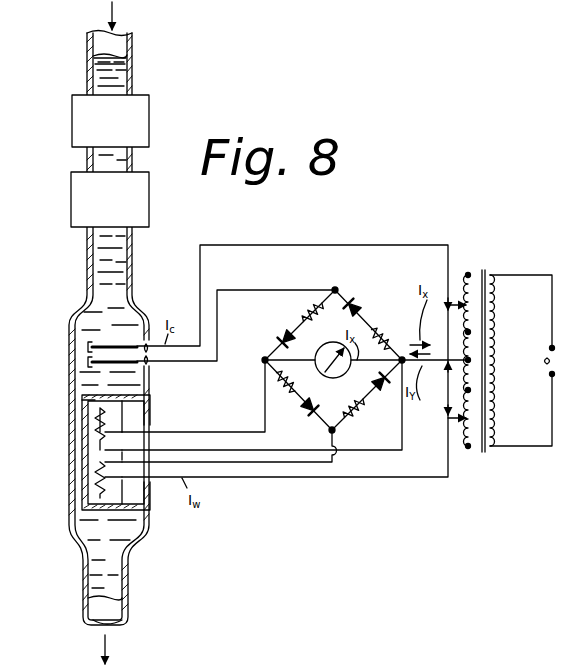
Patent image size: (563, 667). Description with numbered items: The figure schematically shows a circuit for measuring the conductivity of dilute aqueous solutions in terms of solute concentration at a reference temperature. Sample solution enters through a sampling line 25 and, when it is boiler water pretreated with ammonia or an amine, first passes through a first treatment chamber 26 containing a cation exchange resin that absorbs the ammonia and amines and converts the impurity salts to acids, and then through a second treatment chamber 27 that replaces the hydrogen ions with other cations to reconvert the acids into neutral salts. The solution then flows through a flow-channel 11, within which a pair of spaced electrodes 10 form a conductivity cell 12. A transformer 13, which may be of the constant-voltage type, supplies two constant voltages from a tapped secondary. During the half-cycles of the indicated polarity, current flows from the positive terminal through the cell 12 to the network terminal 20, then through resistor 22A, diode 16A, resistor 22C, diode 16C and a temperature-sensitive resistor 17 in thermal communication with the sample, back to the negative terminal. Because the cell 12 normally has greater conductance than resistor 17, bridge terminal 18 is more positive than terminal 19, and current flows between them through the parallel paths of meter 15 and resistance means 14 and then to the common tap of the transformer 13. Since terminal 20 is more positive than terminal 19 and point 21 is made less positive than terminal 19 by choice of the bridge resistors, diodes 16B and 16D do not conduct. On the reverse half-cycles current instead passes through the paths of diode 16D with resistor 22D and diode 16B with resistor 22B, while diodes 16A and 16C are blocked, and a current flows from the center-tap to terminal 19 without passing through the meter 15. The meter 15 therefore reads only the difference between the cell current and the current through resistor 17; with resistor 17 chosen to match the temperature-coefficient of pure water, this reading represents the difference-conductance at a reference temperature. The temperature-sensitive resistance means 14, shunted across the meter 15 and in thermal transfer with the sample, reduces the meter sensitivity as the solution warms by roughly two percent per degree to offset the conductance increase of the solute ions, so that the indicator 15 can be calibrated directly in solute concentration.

The spaced electrodes 10 is at (100, 324).
The flow-channel 11 is at (72, 385).
The conductivity cell 12 is at (87, 353).
The transformer 13 is at (496, 263).
The temperature-sensitive resistance means 14 is at (118, 418).
The meter 15 is at (333, 346).
The diode 16A is at (282, 335).
The diode 16B is at (356, 306).
The diode 16C is at (305, 413).
The diode 16D is at (392, 386).
The temperature-sensitive resistor 17 is at (118, 470).
The bridge terminal 18 is at (265, 360).
The bridge terminal 19 is at (403, 358).
The network terminal 20 is at (337, 289).
The bridge point 21 is at (338, 437).
The resistor 22A is at (311, 308).
The resistor 22B is at (398, 323).
The resistor 22C is at (280, 388).
The resistor 22D is at (358, 413).
The sampling line 25 is at (90, 50).
The first treatment chamber 26 is at (80, 117).
The second treatment chamber 27 is at (82, 192).